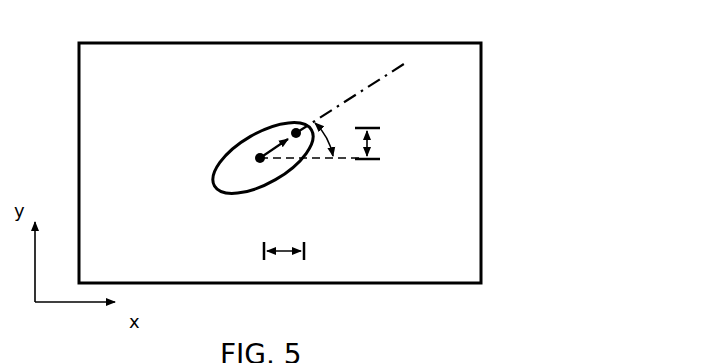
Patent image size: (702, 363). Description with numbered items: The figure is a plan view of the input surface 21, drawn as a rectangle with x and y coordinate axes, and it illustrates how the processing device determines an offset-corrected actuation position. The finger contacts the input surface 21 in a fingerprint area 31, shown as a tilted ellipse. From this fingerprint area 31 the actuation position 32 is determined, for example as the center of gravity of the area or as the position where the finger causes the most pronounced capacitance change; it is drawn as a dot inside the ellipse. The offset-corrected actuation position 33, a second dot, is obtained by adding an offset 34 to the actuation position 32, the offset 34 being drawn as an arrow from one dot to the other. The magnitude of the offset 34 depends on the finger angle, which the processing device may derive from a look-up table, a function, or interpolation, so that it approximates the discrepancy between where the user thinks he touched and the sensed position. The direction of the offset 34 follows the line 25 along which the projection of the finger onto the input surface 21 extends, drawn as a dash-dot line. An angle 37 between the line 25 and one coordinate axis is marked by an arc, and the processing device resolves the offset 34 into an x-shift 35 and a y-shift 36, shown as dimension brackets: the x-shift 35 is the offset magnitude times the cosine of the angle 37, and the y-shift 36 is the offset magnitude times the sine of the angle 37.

The input surface 21 is at (482, 274).
The line 25 is at (381, 95).
The fingerprint area 31 is at (218, 155).
The actuation position 32 is at (260, 165).
The offset-corrected actuation position 33 is at (299, 126).
The offset 34 is at (284, 158).
The x-shift 35 is at (290, 259).
The y-shift 36 is at (379, 148).
The angle 37 is at (331, 134).